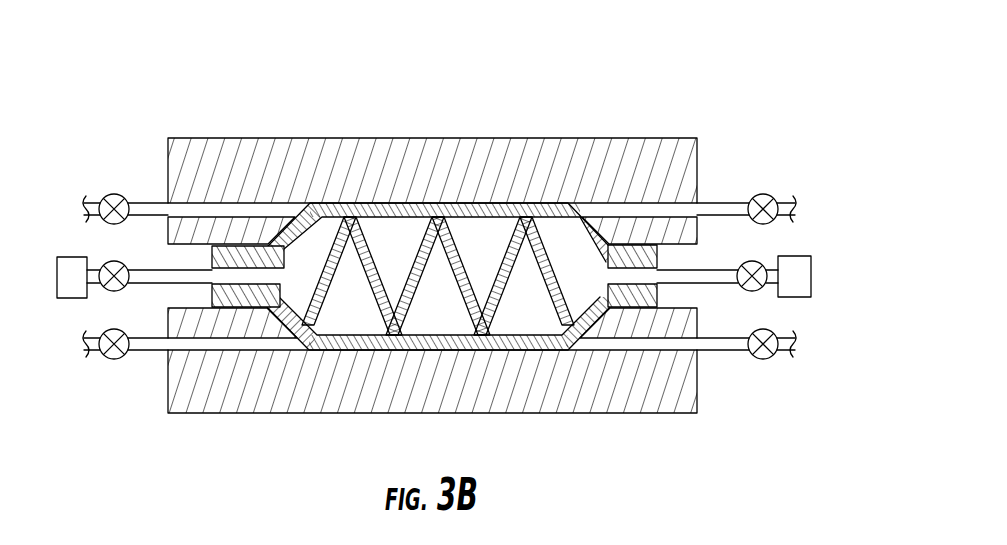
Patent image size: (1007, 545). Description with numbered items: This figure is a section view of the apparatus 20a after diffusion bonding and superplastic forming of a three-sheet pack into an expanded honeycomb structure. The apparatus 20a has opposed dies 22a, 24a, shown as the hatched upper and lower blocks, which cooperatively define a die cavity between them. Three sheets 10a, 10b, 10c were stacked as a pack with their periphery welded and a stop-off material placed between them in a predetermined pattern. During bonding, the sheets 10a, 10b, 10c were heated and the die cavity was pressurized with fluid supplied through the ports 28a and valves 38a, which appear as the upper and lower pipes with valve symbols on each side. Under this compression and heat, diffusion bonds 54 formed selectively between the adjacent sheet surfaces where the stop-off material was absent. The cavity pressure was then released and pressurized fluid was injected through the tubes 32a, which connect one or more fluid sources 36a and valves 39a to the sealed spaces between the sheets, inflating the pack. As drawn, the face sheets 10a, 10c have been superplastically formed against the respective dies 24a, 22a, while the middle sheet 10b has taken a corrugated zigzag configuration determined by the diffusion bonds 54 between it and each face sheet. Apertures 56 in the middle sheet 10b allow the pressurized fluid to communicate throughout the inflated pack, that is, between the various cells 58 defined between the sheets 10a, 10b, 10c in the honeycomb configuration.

The apparatus 20a is at (631, 78).
The die 24a is at (683, 138).
The die 22a is at (683, 413).
The face sheet 10a is at (508, 205).
The middle sheet 10b is at (463, 254).
The face sheet 10c is at (513, 352).
The diffusion bonds 54 is at (348, 232).
The apertures 56 is at (388, 250).
The cells 58 is at (487, 228).
The ports 28a is at (148, 203).
The valves 38a is at (109, 194).
The valves 39a is at (118, 262).
The tubes 32a is at (165, 286).
The fluid sources 36a is at (57, 270).